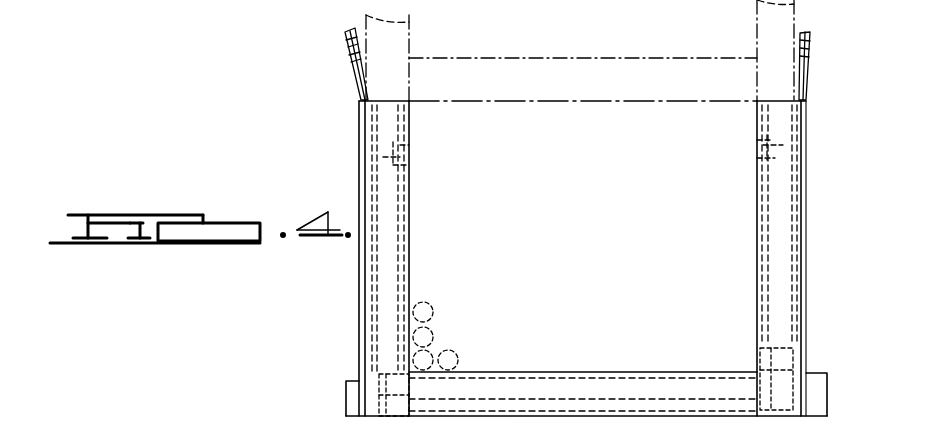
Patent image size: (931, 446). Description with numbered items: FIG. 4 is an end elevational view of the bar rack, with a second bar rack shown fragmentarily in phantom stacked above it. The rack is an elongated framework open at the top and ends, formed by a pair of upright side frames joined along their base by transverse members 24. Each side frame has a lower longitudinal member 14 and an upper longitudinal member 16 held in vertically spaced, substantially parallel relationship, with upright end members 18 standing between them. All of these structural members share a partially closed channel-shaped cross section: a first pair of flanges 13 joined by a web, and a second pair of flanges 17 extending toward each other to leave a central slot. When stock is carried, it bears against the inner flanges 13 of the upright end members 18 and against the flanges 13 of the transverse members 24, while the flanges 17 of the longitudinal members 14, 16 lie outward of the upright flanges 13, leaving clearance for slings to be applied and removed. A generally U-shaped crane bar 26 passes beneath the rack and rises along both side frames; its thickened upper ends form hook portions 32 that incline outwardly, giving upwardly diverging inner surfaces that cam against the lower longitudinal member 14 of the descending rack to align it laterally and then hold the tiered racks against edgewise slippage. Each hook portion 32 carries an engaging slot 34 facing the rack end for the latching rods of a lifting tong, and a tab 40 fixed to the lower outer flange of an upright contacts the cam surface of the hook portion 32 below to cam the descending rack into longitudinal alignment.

The first pair of flanges 13 is at (411, 219).
The lower longitudinal member 14 is at (432, 334).
The upper longitudinal member 16 is at (411, 165).
The second pair of flanges 17 is at (411, 143).
The upright end member 18 is at (400, 44).
The transverse member 24 is at (594, 88).
The crane bar 26 is at (363, 293).
The hook portion 32 is at (357, 97).
The engaging slot 34 is at (350, 69).
The tab 40 is at (345, 392).